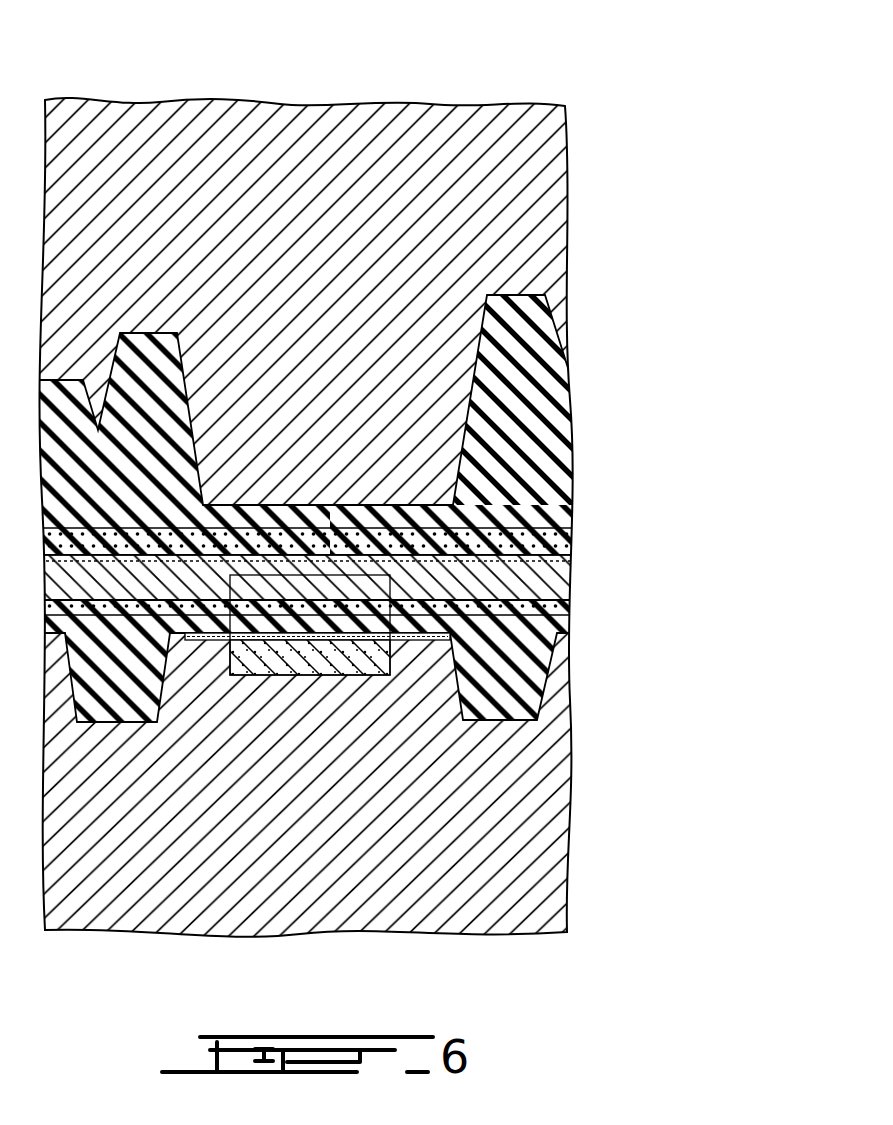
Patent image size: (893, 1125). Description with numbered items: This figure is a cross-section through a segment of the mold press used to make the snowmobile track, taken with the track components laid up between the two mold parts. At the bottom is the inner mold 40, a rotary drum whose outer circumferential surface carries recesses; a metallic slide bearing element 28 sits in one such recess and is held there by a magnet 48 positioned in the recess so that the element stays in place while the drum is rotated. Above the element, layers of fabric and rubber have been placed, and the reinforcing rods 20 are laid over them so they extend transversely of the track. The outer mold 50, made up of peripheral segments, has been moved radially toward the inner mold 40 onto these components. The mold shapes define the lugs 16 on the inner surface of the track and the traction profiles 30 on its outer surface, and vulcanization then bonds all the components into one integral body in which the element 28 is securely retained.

The outer mold 50 is at (573, 152).
The inner mold 40 is at (593, 777).
The profiles 30 is at (520, 413).
The reinforcing rods 20 is at (568, 578).
The lugs 16 is at (510, 668).
The slide bearing element 28 is at (420, 638).
The magnet 48 is at (280, 657).